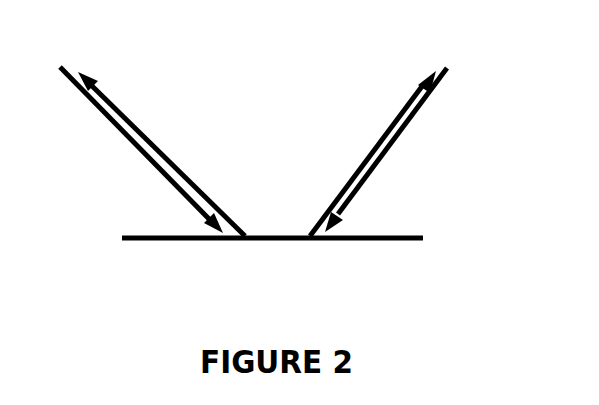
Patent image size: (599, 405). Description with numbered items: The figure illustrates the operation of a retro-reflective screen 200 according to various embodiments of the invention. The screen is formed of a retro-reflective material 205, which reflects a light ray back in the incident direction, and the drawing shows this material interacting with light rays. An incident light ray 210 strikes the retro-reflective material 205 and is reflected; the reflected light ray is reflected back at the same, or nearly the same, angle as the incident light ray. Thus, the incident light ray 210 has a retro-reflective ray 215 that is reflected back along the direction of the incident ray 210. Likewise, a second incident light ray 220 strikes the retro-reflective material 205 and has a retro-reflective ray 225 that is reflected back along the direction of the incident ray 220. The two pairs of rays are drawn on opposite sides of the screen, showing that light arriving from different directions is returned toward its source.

The retro-reflective projection system 200 is at (287, 33).
The retro-reflective material 205 is at (418, 232).
The incident light ray 210 is at (160, 170).
The retro-reflective ray 215 is at (130, 105).
The incident light ray 220 is at (395, 145).
The retro-reflective ray 225 is at (398, 110).